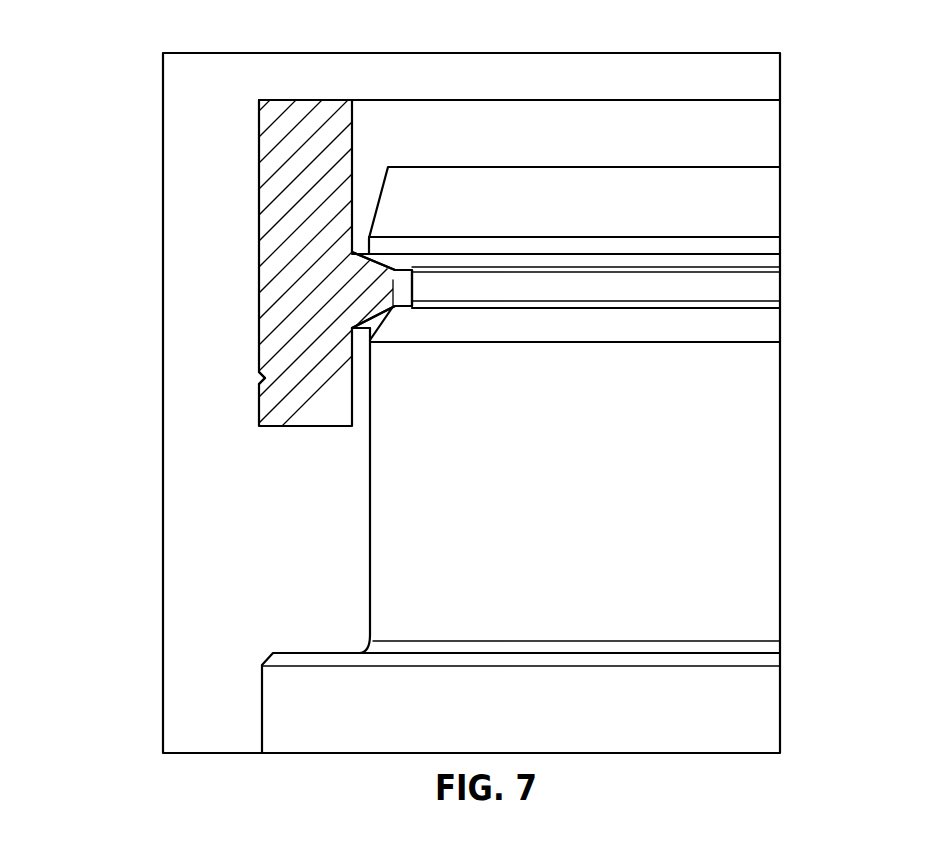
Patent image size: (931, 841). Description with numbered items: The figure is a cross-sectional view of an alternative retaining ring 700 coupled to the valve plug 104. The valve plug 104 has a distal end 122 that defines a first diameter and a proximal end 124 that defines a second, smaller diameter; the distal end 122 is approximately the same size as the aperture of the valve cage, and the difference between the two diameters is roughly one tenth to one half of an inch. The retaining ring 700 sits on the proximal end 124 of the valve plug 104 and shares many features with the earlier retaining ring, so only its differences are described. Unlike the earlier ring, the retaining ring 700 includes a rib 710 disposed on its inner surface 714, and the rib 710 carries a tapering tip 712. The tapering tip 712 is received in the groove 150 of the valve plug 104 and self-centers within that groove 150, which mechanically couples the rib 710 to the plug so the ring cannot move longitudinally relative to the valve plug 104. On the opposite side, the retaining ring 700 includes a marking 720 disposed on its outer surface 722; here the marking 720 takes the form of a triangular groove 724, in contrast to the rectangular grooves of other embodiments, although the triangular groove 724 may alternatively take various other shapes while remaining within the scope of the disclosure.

The inner surface 714 is at (418, 132).
The outer surface 722 is at (258, 115).
The alternative retaining ring 700 is at (309, 265).
The tapering tip 712 is at (387, 283).
The rib 710 is at (357, 315).
The marking 720 is at (152, 396).
The triangular groove 724 is at (262, 378).
The groove 150 is at (765, 291).
The valve plug 104 is at (603, 410).
The proximal end 124 is at (765, 540).
The distal end 122 is at (765, 707).